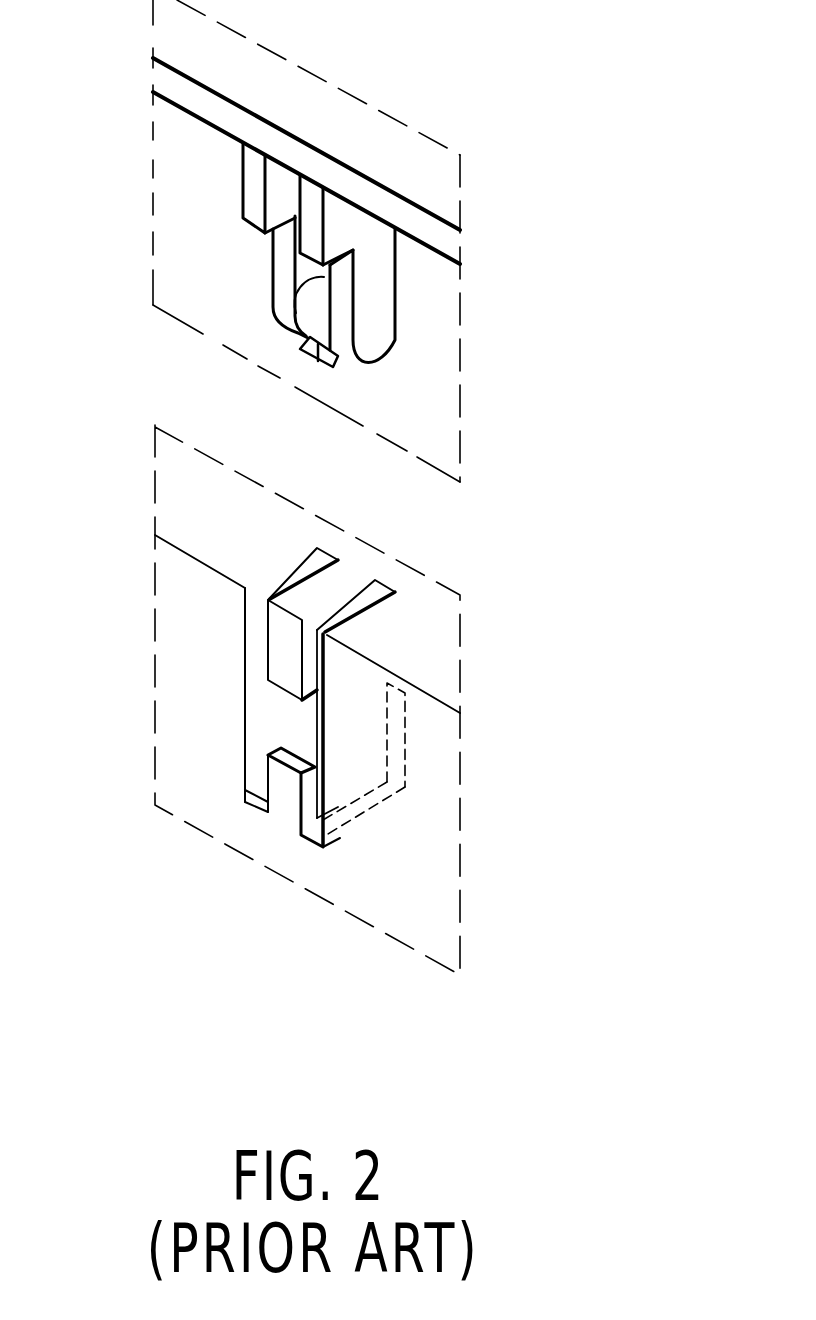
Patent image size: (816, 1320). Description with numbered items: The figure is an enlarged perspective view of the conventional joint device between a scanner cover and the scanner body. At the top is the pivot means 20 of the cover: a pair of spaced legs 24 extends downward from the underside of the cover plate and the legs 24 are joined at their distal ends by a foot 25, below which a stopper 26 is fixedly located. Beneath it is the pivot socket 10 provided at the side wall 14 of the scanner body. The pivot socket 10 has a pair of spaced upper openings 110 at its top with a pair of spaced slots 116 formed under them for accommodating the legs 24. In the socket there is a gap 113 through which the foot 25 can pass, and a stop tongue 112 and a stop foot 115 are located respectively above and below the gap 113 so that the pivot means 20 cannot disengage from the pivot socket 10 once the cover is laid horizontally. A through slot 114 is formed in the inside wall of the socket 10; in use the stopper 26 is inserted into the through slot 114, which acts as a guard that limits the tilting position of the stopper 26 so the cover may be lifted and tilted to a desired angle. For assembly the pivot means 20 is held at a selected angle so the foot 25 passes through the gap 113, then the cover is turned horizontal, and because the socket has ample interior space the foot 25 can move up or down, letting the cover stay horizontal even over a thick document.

The pivot socket 10 is at (365, 693).
The side wall 14 is at (420, 620).
The pivot means 20 is at (565, 88).
The legs 24 is at (318, 306).
The foot 25 is at (316, 300).
The stopper 26 is at (336, 368).
The upper openings 110 is at (309, 650).
The stop tongue 112 is at (280, 647).
The gap 113 is at (283, 720).
The through slot 114 is at (405, 760).
The stop foot 115 is at (266, 810).
The slots 116 is at (253, 605).